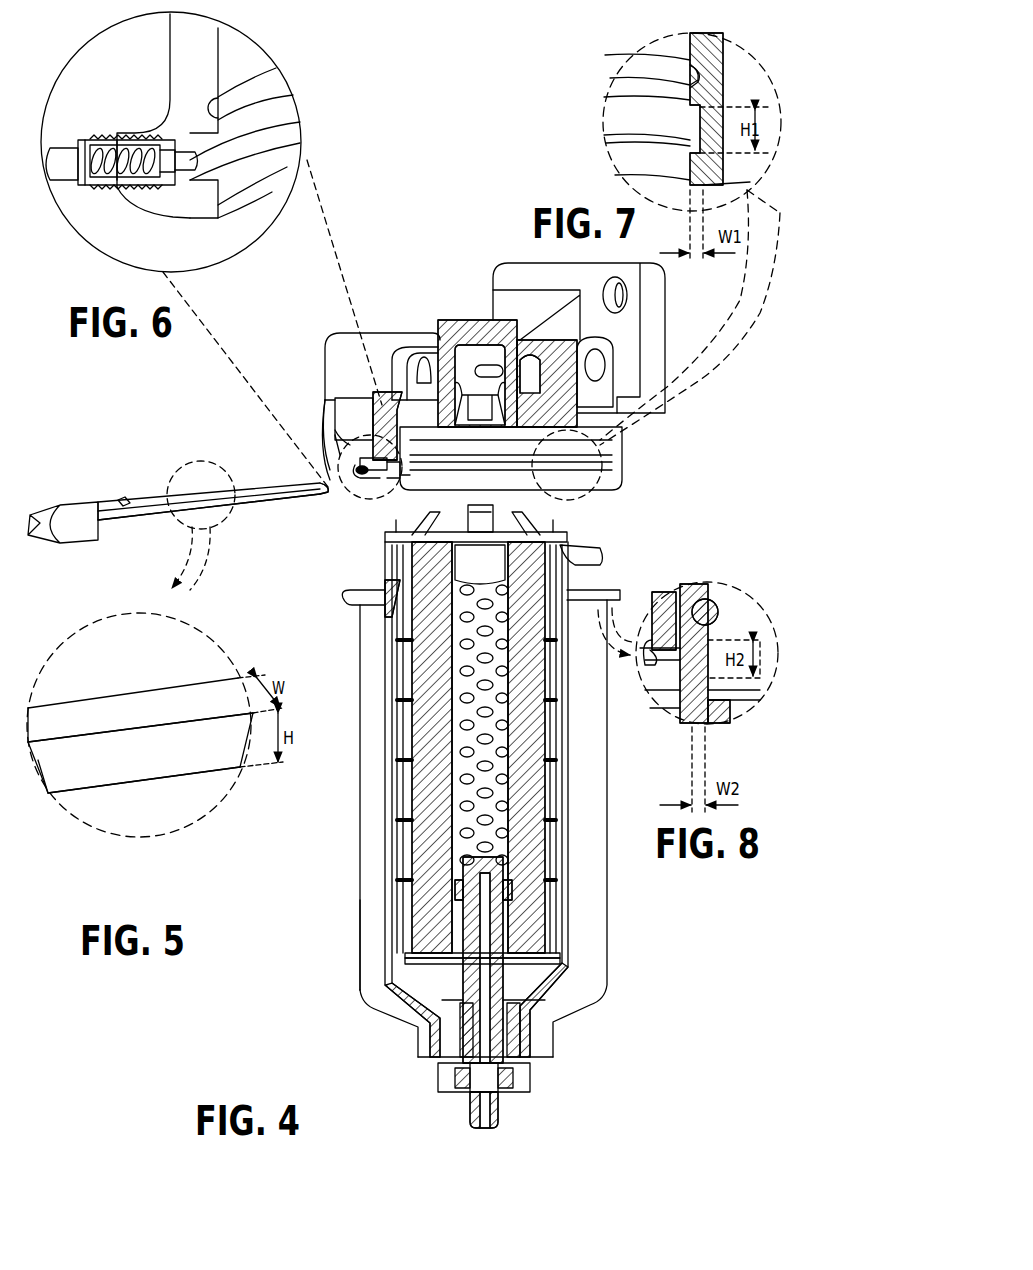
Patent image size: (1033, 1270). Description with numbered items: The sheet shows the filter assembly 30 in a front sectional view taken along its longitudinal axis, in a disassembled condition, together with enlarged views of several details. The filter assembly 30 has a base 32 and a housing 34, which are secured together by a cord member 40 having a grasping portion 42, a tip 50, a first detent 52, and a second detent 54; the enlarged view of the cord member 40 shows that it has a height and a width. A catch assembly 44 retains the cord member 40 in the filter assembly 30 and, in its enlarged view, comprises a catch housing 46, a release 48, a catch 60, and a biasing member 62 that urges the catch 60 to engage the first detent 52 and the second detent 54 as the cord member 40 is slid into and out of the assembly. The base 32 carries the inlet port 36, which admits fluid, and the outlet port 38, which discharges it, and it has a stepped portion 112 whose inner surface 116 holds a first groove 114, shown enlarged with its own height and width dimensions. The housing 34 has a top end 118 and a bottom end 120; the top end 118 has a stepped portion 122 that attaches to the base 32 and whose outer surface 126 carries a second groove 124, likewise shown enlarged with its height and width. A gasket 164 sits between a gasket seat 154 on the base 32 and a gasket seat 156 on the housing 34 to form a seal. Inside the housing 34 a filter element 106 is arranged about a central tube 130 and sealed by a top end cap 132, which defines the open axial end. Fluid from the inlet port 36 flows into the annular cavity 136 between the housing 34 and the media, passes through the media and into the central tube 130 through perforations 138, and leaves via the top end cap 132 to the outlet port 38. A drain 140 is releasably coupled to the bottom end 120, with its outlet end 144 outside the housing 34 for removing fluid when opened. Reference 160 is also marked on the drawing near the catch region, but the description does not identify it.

In FIG. 4, the filter assembly 30 is at (378, 213).
In FIG. 4, the base 32 is at (450, 318).
In FIG. 4, the housing 34 is at (610, 917).
In FIG. 4, the inlet port 36 is at (605, 365).
In FIG. 4, the outlet port 38 is at (460, 335).
In FIG. 5, the cord member 40 is at (172, 782).
In FIG. 5, the grasping portion 42 is at (40, 545).
In FIG. 6, the catch assembly 44 is at (140, 75).
In FIG. 4, the catch assembly 44 is at (334, 455).
In FIG. 6, the catch housing 46 is at (135, 200).
In FIG. 5, the catch housing 46 is at (140, 518).
In FIG. 4, the catch housing 46 is at (354, 398).
In FIG. 6, the release 48 is at (55, 183).
In FIG. 4, the release 48 is at (333, 457).
In FIG. 4, the tip 50 is at (332, 470).
In FIG. 4, the first detent 52 is at (322, 478).
In FIG. 5, the second detent 54 is at (118, 500).
In FIG. 6, the catch 60 is at (188, 168).
In FIG. 4, the catch 60 is at (381, 392).
In FIG. 6, the biasing member 62 is at (107, 145).
In FIG. 4, the biasing member 62 is at (362, 475).
In FIG. 4, the filter element 106 is at (548, 777).
In FIG. 4, the stepped portion 112 is at (625, 440).
In FIG. 4, the first groove 114 is at (610, 465).
In FIG. 4, the inner surface 116 is at (482, 440).
In FIG. 4, the top end 118 is at (335, 602).
In FIG. 4, the bottom end 120 is at (358, 997).
In FIG. 4, the stepped portion 122 is at (592, 578).
In FIG. 4, the second groove 124 is at (590, 552).
In FIG. 4, the outer surface 126 is at (383, 580).
In FIG. 5, the central tube 130 is at (330, 787).
In FIG. 4, the central tube 130 is at (495, 763).
In FIG. 4, the top end cap 132 is at (565, 522).
In FIG. 4, the annular cavity 136 is at (412, 855).
In FIG. 4, the perforations 138 is at (467, 668).
In FIG. 4, the drain 140 is at (500, 1062).
In FIG. 4, the outlet end 144 is at (490, 1130).
In FIG. 7, the gasket seat 154 is at (727, 75).
In FIG. 4, the gasket seat 156 is at (580, 531).
In FIG. 4, the vent 160 is at (347, 427).
In FIG. 8, the gasket 164 is at (718, 606).